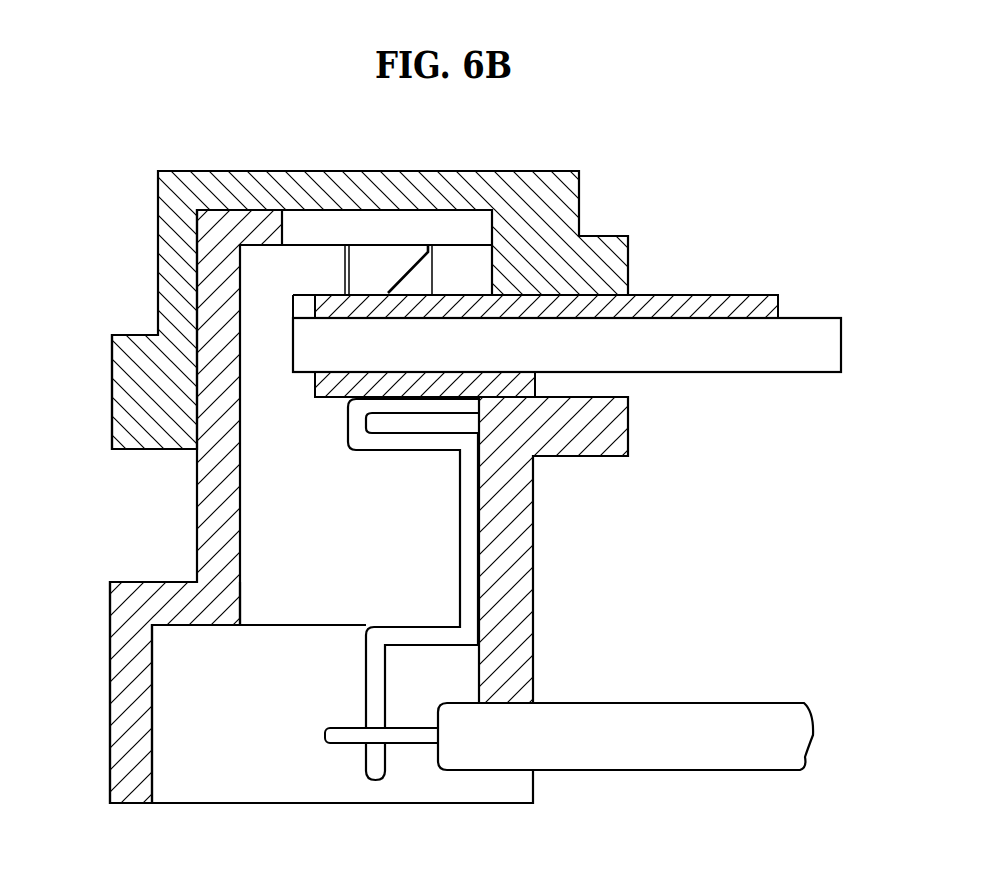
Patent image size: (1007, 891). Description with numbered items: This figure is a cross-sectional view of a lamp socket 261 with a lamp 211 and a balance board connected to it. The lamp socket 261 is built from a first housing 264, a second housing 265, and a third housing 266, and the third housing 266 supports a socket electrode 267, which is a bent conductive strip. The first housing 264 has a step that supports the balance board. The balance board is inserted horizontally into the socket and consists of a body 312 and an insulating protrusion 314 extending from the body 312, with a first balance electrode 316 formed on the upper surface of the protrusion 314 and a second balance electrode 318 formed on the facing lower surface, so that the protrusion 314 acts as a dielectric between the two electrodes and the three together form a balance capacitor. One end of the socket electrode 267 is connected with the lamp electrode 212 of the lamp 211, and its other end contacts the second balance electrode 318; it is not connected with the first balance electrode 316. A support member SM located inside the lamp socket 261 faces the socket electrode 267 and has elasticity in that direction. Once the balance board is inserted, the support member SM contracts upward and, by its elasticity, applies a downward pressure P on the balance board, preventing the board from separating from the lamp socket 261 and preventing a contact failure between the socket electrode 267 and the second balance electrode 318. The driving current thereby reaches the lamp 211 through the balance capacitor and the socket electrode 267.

The lamp socket 261 is at (652, 163).
The first housing 264 is at (128, 382).
The second housing 265 is at (122, 722).
The third housing 266 is at (168, 506).
The socket electrode 267 is at (364, 758).
The lamp 211 is at (684, 754).
The lamp electrode 212 is at (415, 735).
The body 312 is at (479, 326).
The protrusion 314 is at (337, 353).
The first balance electrode 316 is at (333, 310).
The second balance electrode 318 is at (330, 382).
The support member SM is at (402, 262).
The pressing direction P is at (359, 253).